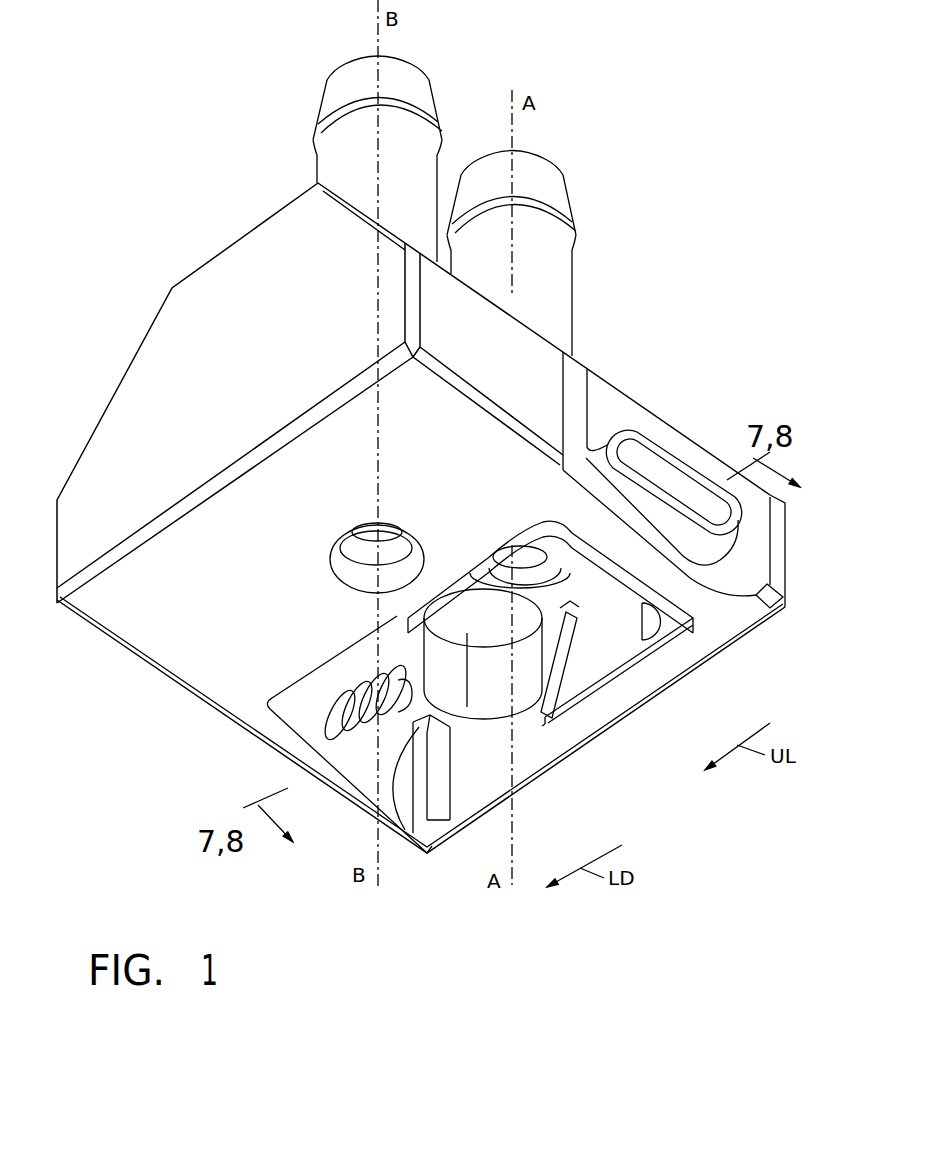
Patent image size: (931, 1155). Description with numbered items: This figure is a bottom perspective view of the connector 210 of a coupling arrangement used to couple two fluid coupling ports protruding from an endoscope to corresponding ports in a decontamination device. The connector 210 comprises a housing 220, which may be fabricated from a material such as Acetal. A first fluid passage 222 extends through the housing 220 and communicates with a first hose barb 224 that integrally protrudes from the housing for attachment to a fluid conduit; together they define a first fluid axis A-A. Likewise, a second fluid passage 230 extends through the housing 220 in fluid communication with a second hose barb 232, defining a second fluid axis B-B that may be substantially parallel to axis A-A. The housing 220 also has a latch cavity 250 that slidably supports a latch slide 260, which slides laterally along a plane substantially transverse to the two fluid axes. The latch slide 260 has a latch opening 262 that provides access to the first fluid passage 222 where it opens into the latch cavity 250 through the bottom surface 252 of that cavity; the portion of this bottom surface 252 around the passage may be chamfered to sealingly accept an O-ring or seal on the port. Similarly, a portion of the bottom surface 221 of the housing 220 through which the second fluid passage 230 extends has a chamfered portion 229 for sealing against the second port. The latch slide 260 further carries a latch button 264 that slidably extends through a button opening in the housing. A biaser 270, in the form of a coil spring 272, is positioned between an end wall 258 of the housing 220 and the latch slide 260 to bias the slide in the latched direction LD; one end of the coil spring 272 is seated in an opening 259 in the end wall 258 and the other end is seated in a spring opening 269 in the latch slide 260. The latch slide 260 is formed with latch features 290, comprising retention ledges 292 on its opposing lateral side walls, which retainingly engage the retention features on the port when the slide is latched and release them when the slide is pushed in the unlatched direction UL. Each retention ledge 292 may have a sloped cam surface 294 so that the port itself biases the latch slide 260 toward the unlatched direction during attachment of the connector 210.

The connector 210 is at (663, 185).
The housing 220 is at (207, 308).
The bottom surface 221 is at (290, 492).
The first fluid passage 222 is at (537, 553).
The first hose barb 224 is at (583, 272).
The chamfered portion 229 is at (334, 566).
The second fluid passage 230 is at (352, 592).
The second hose barb 232 is at (315, 127).
The latch cavity 250 is at (582, 700).
The bottom surface 252 is at (532, 598).
The end wall 258 is at (280, 738).
The opening 259 is at (355, 767).
The latch slide 260 is at (556, 742).
The latch opening 262 is at (597, 587).
The latch button 264 is at (647, 452).
The spring opening 269 is at (442, 852).
The biaser 270 is at (360, 765).
The coil spring 272 is at (350, 697).
The latch feature 290 is at (590, 693).
The retention ledge 292 is at (548, 620).
The cam surface 294 is at (577, 670).